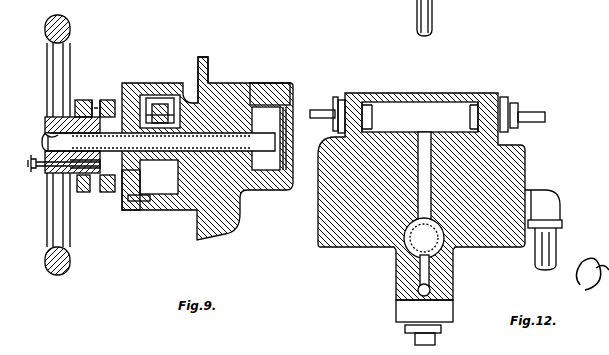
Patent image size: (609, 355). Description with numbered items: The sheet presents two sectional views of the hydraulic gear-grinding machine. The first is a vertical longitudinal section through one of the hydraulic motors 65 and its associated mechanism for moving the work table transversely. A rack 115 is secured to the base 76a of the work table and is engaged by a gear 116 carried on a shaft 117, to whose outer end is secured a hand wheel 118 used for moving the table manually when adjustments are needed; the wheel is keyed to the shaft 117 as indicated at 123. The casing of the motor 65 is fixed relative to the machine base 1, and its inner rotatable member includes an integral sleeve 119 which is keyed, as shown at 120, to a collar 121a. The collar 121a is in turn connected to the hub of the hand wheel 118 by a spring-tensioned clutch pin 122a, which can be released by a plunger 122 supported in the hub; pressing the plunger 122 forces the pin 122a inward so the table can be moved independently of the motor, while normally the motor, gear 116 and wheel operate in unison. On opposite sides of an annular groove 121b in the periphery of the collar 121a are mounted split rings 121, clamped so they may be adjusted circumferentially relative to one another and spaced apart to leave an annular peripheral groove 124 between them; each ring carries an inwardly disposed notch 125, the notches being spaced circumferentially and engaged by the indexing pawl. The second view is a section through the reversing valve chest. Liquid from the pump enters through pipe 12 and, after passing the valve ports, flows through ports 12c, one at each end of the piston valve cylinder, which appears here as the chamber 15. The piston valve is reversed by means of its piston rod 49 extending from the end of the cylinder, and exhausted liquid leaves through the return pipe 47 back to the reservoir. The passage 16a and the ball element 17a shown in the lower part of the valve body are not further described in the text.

In FIG. 9, the machine base 1 is at (243, 218).
In FIG. 9, the work table base 76a is at (228, 85).
In FIG. 9, the hydraulic motor 65 is at (150, 88).
In FIG. 9, the rack 115 is at (282, 88).
In FIG. 9, the gear 116 is at (282, 141).
In FIG. 9, the shaft 117 is at (153, 180).
In FIG. 9, the hand wheel 118 is at (72, 32).
In FIG. 9, the sleeve 119 is at (135, 130).
In FIG. 9, the key 120 is at (71, 142).
In FIG. 9, the split rings 121 is at (84, 100).
In FIG. 9, the collar 121a is at (122, 195).
In FIG. 9, the annular groove 121b is at (105, 192).
In FIG. 9, the plunger 122 is at (70, 168).
In FIG. 9, the clutch pin 122a is at (56, 180).
In FIG. 9, the key 123 is at (46, 128).
In FIG. 9, the annular peripheral groove 124 is at (88, 192).
In FIG. 9, the notch 125 is at (96, 100).
In FIG. 12, the pipe 12 is at (435, 10).
In FIG. 12, the ports 12c is at (368, 104).
In FIG. 12, the chamber 15 is at (421, 196).
In FIG. 12, the passage 16a is at (430, 276).
In FIG. 12, the ball valve 17a is at (430, 258).
In FIG. 12, the return pipe 47 is at (552, 208).
In FIG. 12, the piston rod 49 is at (330, 108).